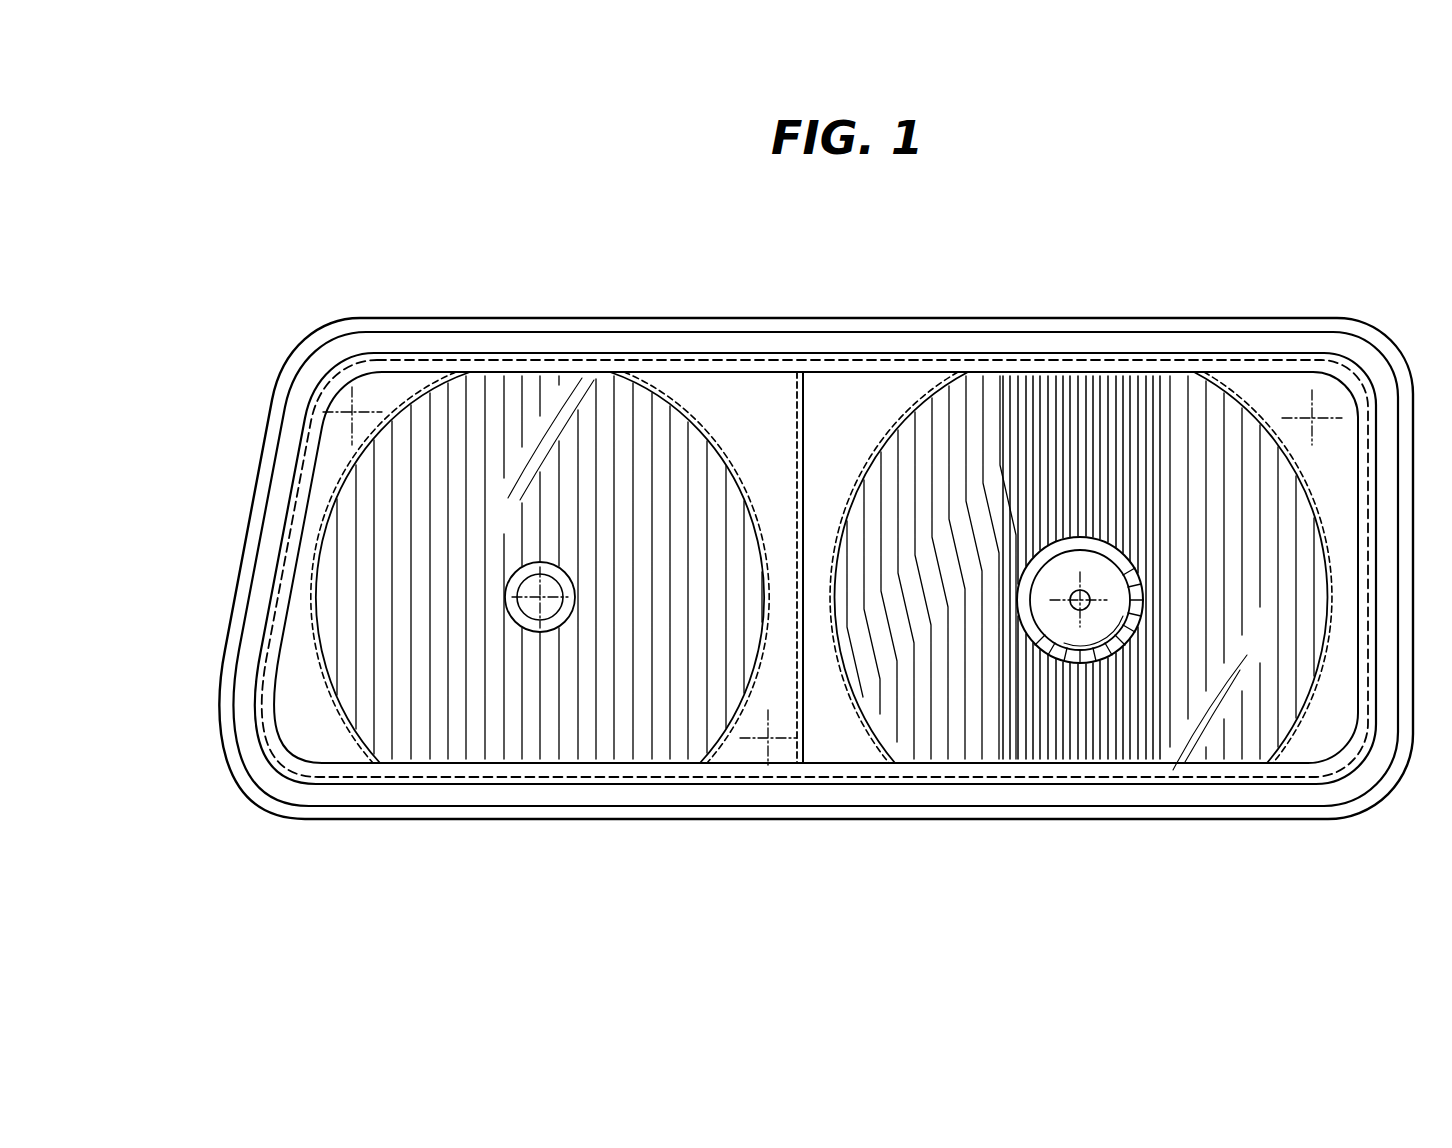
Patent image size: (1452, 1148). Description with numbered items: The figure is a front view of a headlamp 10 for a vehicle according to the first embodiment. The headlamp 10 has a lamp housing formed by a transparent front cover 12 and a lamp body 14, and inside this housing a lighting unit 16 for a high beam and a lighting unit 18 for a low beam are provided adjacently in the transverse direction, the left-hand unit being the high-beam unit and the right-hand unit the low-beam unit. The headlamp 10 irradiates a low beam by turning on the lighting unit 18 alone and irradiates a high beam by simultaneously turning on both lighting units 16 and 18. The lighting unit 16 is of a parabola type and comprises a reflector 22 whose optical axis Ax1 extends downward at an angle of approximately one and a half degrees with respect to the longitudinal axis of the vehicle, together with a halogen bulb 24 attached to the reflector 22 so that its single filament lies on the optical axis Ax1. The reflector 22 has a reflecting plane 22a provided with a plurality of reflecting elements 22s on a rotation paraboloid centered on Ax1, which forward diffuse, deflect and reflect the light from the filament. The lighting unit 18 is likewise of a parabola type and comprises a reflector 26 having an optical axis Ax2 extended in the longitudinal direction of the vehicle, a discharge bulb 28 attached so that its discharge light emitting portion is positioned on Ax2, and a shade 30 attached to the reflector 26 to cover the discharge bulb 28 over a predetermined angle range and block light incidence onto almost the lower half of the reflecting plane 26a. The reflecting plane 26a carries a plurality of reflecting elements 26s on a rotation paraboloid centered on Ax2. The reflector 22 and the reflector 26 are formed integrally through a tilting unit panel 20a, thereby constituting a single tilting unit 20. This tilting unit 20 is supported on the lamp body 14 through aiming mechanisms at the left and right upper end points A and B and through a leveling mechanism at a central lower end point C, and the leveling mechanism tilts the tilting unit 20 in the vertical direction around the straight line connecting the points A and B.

The headlamp for a vehicle 10 is at (1184, 255).
The transparent front cover 12 is at (958, 349).
The lamp body 14 is at (850, 311).
The lighting unit for a high beam 16 is at (437, 392).
The lighting unit for a low beam 18 is at (1244, 391).
The tilting unit 20 is at (707, 358).
The tilting unit panel 20a is at (772, 402).
The reflector 22 is at (349, 462).
The reflecting plane 22a is at (372, 538).
The reflecting elements 22s is at (532, 742).
The halogen bulb 24 is at (562, 582).
The reflector 26 is at (861, 467).
The reflecting plane 26a is at (943, 458).
The reflecting elements 26s is at (1020, 752).
The discharge bulb 28 is at (1096, 590).
The shade 30 is at (1040, 550).
The left upper end point A is at (352, 412).
The right upper end point B is at (1313, 418).
The central lower end point C is at (768, 738).
The optical axis Ax1 is at (539, 602).
The optical axis Ax2 is at (1065, 621).